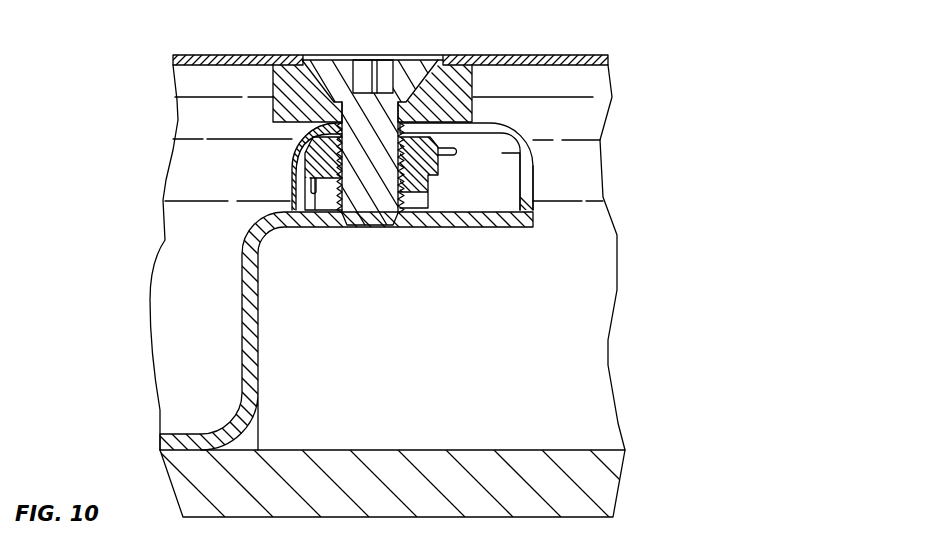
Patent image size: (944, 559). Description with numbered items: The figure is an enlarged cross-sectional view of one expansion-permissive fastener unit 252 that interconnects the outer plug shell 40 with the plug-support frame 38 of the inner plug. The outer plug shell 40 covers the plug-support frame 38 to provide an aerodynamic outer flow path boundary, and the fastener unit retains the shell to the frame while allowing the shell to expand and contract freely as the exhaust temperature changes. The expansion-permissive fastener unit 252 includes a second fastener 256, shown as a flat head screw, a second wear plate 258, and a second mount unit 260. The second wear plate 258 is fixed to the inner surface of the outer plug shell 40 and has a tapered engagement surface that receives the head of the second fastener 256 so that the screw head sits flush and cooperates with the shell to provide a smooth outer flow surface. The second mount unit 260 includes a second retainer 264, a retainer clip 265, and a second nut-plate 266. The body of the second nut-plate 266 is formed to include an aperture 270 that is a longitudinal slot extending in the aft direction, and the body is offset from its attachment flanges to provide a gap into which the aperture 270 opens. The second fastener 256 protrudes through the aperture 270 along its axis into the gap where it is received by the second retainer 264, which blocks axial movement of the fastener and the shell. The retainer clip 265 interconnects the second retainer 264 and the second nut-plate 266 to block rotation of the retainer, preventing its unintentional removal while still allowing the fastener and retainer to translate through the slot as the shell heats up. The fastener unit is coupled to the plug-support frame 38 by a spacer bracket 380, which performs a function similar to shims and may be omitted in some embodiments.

The plug-support frame 38 is at (606, 483).
The outer plug shell 40 is at (608, 60).
The expansion-permissive fastener unit 252 is at (378, 48).
The second fastener 256 is at (367, 190).
The second wear plate 258 is at (458, 95).
The second mount unit 260 is at (545, 135).
The second retainer 264 is at (415, 158).
The retainer clip 265 is at (298, 215).
The second nut-plate 266 is at (530, 190).
The aperture 270 is at (489, 118).
The spacer bracket 380 is at (250, 353).